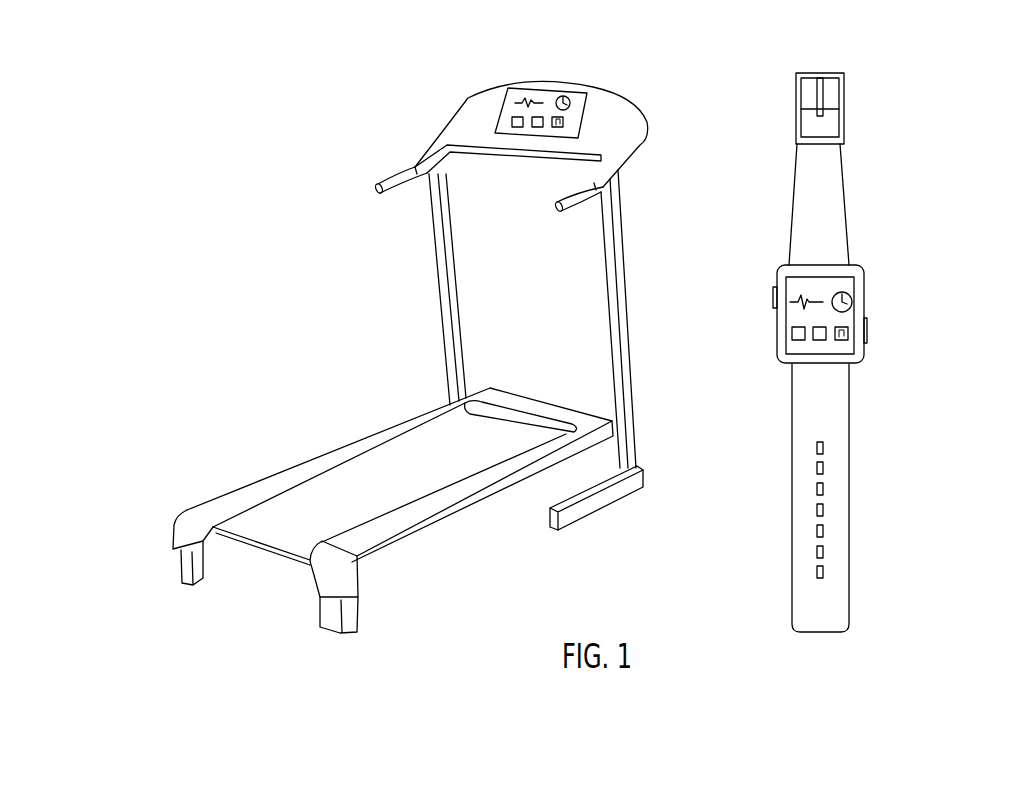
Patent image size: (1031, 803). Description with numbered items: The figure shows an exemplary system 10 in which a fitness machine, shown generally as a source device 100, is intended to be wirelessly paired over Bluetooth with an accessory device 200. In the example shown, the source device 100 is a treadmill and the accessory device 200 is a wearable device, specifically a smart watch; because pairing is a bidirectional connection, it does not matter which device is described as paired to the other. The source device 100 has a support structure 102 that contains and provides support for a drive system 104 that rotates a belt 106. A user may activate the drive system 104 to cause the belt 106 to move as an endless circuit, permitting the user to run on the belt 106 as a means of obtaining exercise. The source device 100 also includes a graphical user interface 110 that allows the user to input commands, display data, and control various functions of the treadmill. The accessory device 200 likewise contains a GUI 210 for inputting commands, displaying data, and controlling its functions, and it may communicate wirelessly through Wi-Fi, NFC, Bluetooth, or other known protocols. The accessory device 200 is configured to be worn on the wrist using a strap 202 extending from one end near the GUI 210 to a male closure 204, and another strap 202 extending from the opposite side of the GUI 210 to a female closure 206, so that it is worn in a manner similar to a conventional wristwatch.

The system 10 is at (222, 188).
The source device 100 is at (440, 595).
The support structure 102 is at (455, 528).
The drive system 104 is at (253, 581).
The belt 106 is at (408, 488).
The graphical user interface 110 is at (577, 102).
The accessory device 200 is at (937, 524).
The strap 202 is at (833, 207).
The male closure 204 is at (864, 84).
The female closure 206 is at (823, 532).
The GUI 210 is at (843, 287).